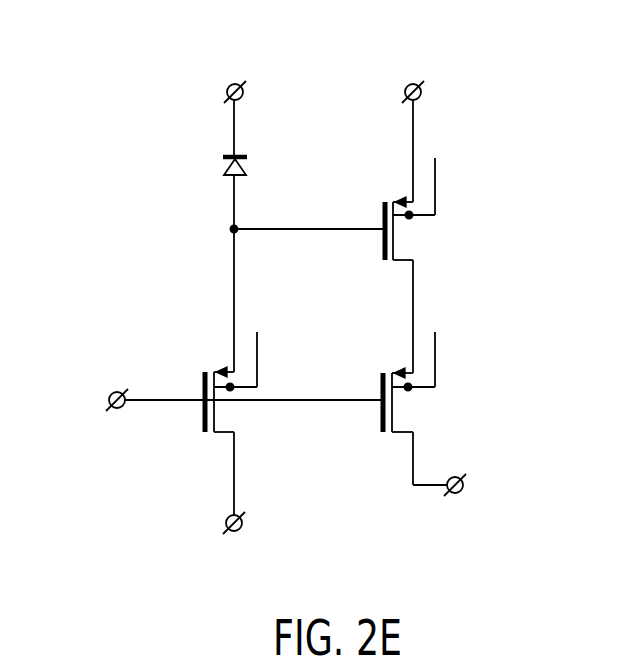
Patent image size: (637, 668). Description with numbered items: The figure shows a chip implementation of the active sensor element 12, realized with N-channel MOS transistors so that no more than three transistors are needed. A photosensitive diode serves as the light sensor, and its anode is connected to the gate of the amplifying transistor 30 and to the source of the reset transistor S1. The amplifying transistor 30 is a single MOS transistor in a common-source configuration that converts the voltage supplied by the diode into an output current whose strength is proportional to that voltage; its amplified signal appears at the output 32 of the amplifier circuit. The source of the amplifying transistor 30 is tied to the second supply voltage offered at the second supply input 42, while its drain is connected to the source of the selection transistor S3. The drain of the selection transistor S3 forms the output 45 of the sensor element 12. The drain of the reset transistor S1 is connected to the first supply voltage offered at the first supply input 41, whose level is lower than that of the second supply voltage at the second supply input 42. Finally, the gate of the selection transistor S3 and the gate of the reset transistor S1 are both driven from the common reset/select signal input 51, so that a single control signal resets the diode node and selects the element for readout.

The sensor element 12 is at (176, 109).
The second supply input 42 is at (410, 82).
The amplifying transistor 30 is at (382, 250).
The output of the amplifier circuit 32 is at (416, 278).
The reset transistor S1 is at (200, 422).
The selection transistor S3 is at (380, 421).
The reset/select signal input 51 is at (108, 398).
The output of the sensor element 45 is at (464, 488).
The first supply input 41 is at (233, 532).